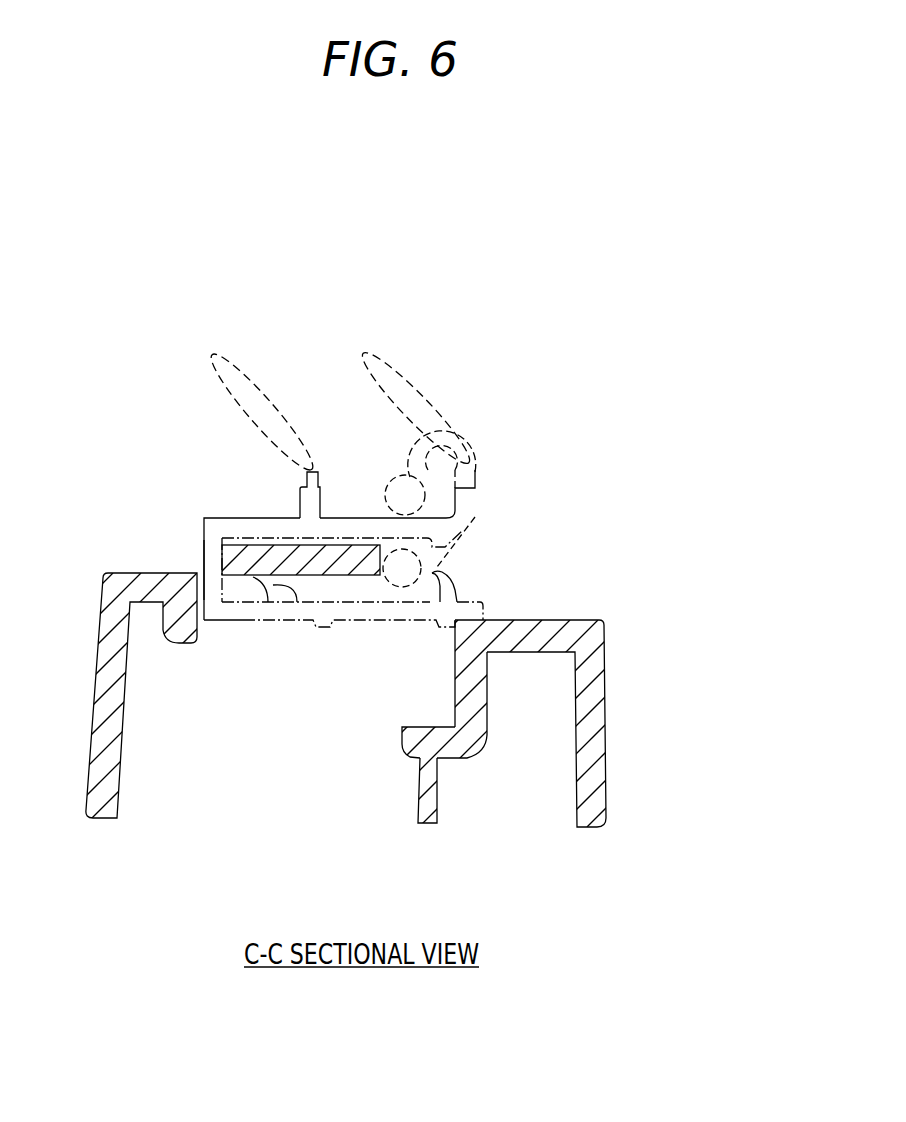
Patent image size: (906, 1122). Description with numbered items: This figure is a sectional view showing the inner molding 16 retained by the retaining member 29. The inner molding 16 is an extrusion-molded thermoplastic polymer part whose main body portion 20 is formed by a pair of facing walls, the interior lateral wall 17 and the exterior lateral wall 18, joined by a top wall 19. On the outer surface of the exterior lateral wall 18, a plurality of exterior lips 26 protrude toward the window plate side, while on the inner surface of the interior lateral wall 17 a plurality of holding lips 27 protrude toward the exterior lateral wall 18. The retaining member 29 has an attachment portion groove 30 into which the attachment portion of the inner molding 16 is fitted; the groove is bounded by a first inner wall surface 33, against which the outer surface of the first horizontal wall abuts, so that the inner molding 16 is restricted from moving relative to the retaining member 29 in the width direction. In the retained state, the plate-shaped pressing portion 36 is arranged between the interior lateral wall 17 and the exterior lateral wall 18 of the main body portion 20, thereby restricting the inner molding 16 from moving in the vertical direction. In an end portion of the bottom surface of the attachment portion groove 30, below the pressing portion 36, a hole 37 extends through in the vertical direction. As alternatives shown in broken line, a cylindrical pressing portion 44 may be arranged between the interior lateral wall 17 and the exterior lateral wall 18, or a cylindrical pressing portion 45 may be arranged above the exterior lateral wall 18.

The inner molding 16 is at (256, 542).
The interior lateral wall 17 is at (243, 618).
The exterior lateral wall 18 is at (265, 527).
The top wall 19 is at (205, 563).
The main body portion 20 is at (203, 538).
The exterior lip 26 is at (243, 370).
The holding lip 27 is at (432, 577).
The retaining member 29 is at (494, 726).
The attachment portion groove 30 is at (418, 730).
The first inner wall surface 33 is at (455, 662).
The pressing portion 36 is at (357, 543).
The hole 37 is at (402, 740).
The cylindrical pressing portion 44 is at (432, 563).
The cylindrical pressing portion 45 is at (460, 428).